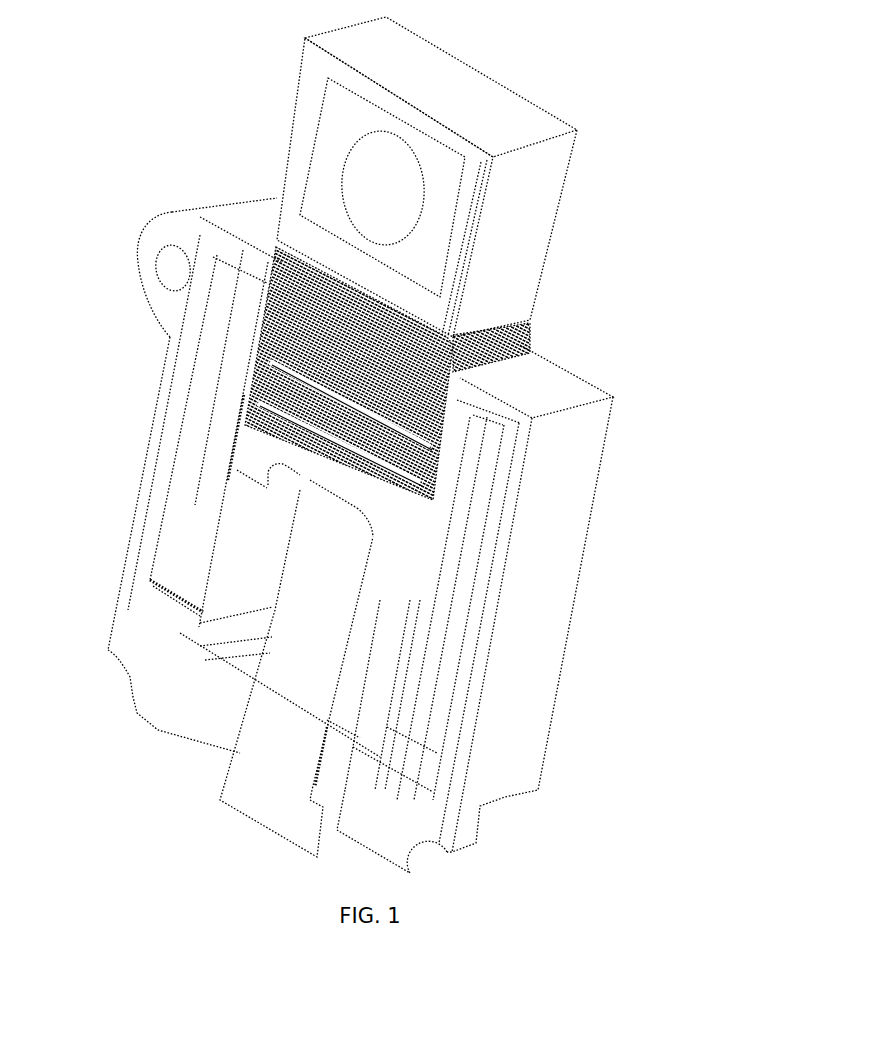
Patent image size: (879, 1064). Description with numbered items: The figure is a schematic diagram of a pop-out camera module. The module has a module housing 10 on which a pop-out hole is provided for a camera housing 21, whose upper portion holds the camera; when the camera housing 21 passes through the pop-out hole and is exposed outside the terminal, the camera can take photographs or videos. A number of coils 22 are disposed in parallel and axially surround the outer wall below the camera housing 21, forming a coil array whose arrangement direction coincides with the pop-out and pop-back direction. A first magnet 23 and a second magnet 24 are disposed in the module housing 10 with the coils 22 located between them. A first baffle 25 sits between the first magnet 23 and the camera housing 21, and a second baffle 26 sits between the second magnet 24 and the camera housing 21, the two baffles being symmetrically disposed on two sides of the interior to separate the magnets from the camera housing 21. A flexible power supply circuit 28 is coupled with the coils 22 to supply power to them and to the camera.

The module housing 10 is at (408, 609).
The camera housing 21 is at (427, 177).
The coils 22 is at (450, 373).
The first magnet 23 is at (168, 475).
The second magnet 24 is at (542, 621).
The first baffle 25 is at (163, 643).
The second baffle 26 is at (456, 721).
The power supply circuit 28 is at (280, 664).